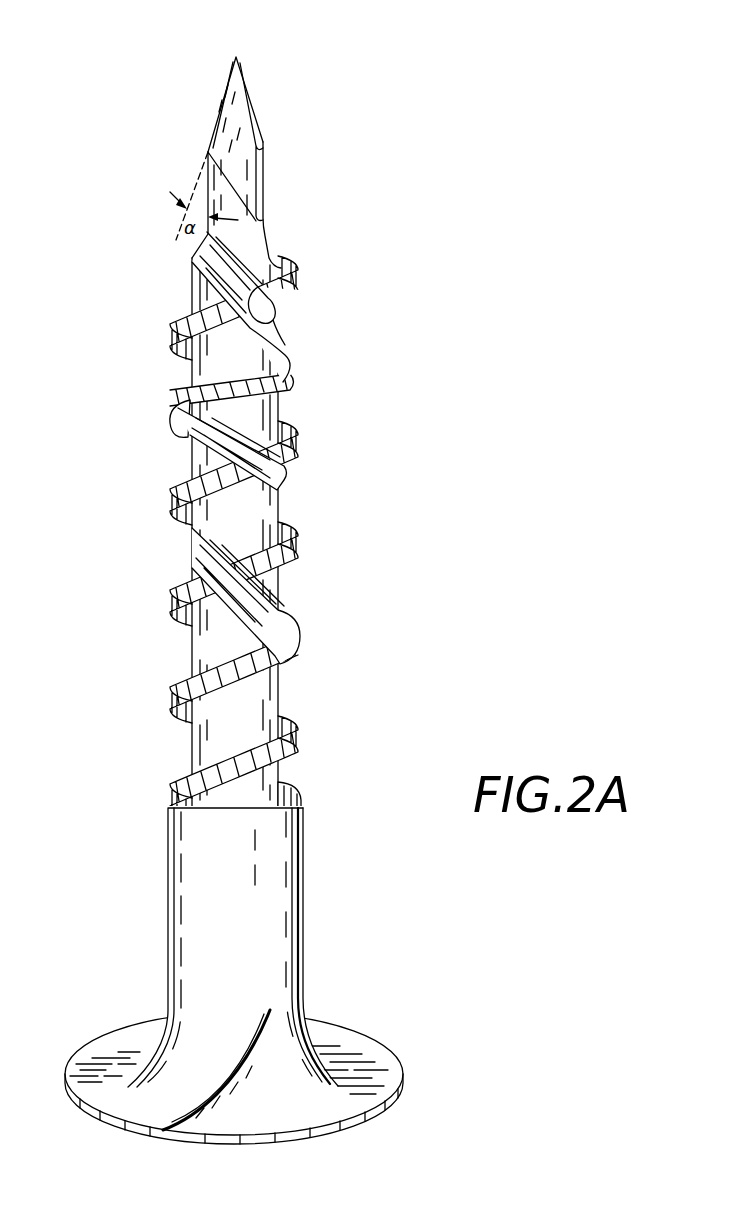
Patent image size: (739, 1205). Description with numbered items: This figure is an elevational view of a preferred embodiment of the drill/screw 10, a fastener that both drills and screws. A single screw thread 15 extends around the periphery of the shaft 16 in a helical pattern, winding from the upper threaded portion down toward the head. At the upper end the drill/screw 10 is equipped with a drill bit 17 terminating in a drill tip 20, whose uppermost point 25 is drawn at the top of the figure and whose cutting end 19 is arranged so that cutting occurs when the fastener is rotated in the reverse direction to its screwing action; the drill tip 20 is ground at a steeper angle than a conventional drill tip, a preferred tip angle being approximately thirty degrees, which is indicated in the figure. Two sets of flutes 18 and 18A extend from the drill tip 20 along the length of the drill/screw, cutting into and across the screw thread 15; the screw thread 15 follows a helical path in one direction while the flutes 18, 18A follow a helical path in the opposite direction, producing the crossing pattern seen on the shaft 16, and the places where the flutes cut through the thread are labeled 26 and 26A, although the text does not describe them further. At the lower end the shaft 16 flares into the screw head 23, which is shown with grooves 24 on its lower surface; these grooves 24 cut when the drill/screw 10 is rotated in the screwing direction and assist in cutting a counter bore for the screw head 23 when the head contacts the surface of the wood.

The drill/screw 10 is at (302, 907).
The screw thread 15 is at (298, 548).
The shaft 16 is at (283, 692).
The drill bit 17 is at (267, 207).
The flutes 18 is at (200, 243).
The flutes 18A is at (198, 392).
The cutting end 19 is at (255, 117).
The drill tip 20 is at (263, 126).
The screw head 23 is at (365, 1036).
The grooves 24 is at (253, 1038).
The point 25 is at (237, 56).
The notch in first thread 26 is at (274, 318).
The notch in second thread 26A is at (180, 440).